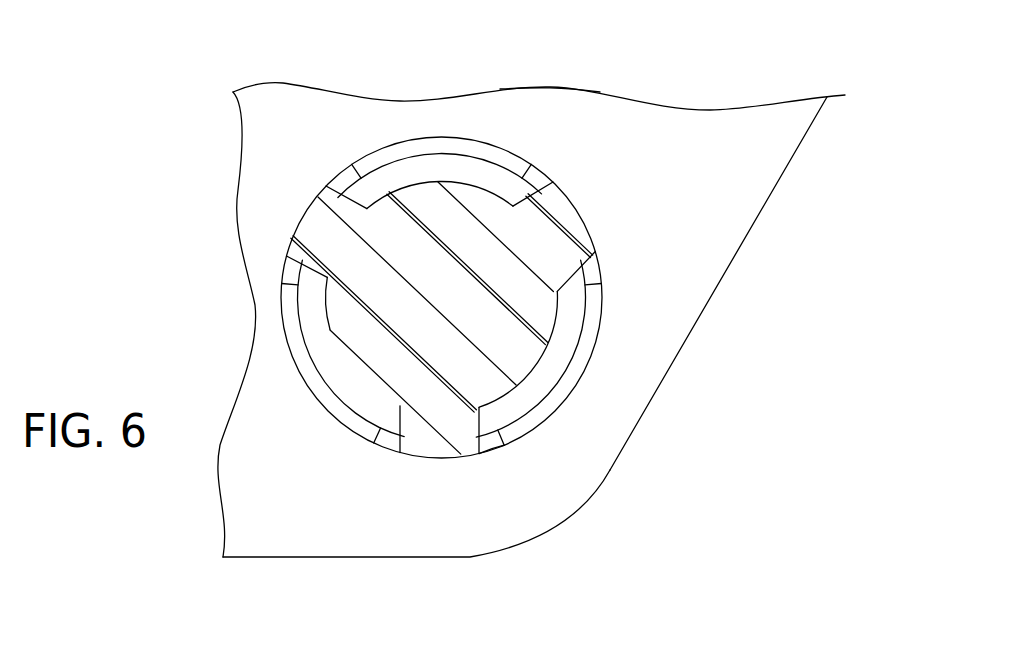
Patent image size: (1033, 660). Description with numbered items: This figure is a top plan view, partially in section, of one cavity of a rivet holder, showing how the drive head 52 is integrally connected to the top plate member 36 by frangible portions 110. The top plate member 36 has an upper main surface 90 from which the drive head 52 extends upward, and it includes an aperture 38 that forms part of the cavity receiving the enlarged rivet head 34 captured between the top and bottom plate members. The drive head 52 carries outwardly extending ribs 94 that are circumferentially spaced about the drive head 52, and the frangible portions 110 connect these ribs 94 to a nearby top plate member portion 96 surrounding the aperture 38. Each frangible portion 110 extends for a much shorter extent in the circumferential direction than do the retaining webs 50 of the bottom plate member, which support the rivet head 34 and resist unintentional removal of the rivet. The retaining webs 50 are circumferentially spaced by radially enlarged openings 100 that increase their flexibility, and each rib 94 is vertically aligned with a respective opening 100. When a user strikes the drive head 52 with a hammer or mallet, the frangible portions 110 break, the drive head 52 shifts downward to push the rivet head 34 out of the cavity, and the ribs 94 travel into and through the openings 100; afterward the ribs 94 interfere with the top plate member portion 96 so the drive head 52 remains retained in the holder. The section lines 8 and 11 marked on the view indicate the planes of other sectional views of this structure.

The top plate member 36 is at (705, 130).
The upper main surface 90 is at (618, 140).
The top plate member portion 96 is at (737, 203).
The aperture 38 is at (343, 180).
The retaining webs 50 is at (567, 380).
The openings 100 is at (492, 440).
The rivet head 34 is at (565, 335).
The drive head 52 is at (342, 317).
The ribs 94 is at (460, 430).
The frangible portions 110 is at (420, 443).
The section line 8- 8 is at (440, 93).
The section line 11- 11 is at (224, 316).